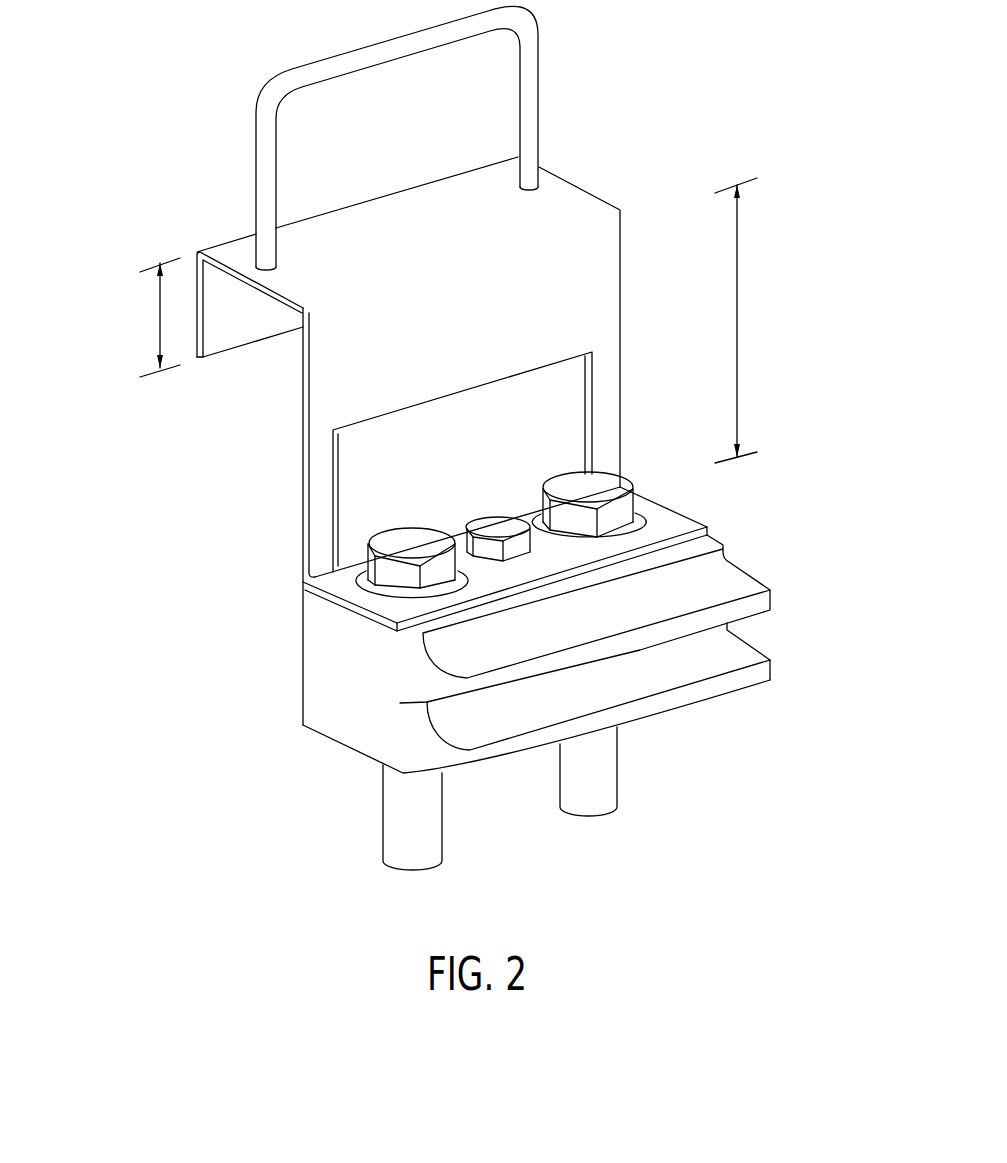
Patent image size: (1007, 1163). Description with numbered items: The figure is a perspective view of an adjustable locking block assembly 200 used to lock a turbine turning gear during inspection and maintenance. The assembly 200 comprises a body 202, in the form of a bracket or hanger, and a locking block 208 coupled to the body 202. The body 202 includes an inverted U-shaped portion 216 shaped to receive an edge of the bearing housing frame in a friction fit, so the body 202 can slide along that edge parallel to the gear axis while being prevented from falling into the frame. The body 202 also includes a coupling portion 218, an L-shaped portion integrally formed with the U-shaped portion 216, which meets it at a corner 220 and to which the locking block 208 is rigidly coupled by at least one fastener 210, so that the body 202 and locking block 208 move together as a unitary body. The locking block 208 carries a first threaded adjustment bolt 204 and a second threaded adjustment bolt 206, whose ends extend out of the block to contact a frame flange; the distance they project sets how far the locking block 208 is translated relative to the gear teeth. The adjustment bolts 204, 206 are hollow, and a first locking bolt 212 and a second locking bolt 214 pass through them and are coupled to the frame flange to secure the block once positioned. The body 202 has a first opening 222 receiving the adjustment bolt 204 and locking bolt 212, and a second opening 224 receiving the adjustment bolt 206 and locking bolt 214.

The adjustable locking block assembly 200 is at (705, 56).
The body 202 is at (558, 172).
The first threaded adjustment bolt 204 is at (350, 593).
The second threaded adjustment bolt 206 is at (648, 524).
The locking block 208 is at (342, 746).
The fastener 210 is at (478, 528).
The first locking bolt 212 is at (627, 482).
The second locking bolt 214 is at (383, 538).
The inverted U-shaped portion 216 is at (158, 317).
The coupling portion 218 is at (738, 335).
The corner 220 is at (621, 204).
The first opening 222 is at (370, 582).
The second opening 224 is at (632, 494).